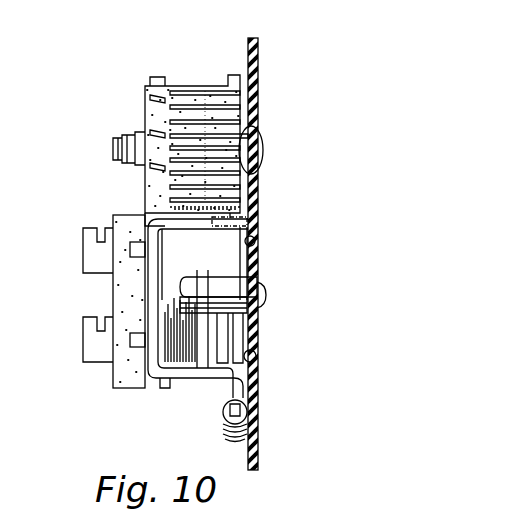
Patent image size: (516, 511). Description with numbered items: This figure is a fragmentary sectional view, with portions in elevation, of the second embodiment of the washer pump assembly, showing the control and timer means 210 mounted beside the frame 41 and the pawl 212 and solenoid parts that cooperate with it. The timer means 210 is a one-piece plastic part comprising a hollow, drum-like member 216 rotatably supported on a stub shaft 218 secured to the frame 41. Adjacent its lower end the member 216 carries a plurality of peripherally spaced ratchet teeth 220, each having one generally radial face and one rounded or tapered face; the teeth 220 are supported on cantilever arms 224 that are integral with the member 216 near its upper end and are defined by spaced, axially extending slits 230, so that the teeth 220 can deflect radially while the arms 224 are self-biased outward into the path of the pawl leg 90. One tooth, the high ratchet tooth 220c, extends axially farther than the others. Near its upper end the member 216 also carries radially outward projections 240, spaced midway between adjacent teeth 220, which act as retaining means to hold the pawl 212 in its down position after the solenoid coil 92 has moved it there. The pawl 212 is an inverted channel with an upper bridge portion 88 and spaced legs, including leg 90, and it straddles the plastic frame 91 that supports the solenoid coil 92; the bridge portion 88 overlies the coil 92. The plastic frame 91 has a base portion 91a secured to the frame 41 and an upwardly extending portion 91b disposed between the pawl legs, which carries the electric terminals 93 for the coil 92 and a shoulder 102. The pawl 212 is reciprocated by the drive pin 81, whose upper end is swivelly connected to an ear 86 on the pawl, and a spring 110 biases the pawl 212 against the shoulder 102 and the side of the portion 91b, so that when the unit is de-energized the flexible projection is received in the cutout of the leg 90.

The frame 41 is at (258, 48).
The drum-like member 216 is at (152, 184).
The ratchet teeth 220 is at (232, 136).
The projections 240 is at (161, 93).
The control and timer means 210 is at (177, 74).
The cantilever arms 224 is at (190, 137).
The stub shaft 218 is at (120, 146).
The slits 230 is at (248, 126).
The high ratchet tooth 220c is at (243, 216).
The leg 90 is at (258, 241).
The drive pin 81 is at (200, 282).
The ear 86 is at (200, 331).
The shoulder 102 is at (202, 425).
The pawl 212 is at (224, 422).
The spring 110 is at (258, 442).
The base portion 91a is at (256, 364).
The bridge portion 88 is at (145, 303).
The plastic frame 91 is at (122, 270).
The solenoid coil 92 is at (170, 346).
The electric terminals 93 is at (88, 236).
The upwardly extending portion 91b is at (128, 389).